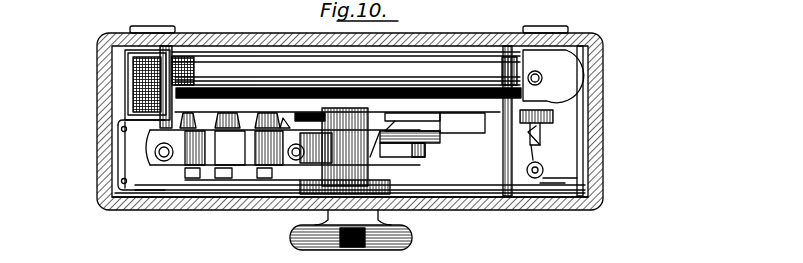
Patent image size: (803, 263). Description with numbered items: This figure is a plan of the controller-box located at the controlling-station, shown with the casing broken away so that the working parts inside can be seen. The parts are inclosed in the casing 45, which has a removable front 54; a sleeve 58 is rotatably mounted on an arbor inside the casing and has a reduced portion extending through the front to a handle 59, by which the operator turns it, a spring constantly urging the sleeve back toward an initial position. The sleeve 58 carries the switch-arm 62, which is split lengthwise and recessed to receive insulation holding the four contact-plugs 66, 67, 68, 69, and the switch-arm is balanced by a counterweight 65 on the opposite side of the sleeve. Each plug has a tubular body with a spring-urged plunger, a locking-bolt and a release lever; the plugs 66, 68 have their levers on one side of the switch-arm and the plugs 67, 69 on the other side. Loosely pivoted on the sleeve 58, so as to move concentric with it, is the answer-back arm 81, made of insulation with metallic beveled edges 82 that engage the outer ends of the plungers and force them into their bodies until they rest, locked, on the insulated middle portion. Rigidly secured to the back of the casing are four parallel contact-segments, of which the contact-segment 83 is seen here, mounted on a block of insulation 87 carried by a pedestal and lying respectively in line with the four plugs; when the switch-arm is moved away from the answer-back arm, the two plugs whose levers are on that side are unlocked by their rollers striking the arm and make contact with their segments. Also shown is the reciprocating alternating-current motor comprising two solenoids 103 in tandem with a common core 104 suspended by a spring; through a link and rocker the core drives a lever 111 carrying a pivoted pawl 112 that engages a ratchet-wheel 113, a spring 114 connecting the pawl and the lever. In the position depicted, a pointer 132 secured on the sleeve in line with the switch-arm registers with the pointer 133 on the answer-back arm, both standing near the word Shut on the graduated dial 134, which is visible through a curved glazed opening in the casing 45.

The casing 45 is at (604, 58).
The removable front 54 is at (603, 204).
The sleeve 58 is at (395, 186).
The handle 59 is at (412, 240).
The switch-arm 62 is at (320, 148).
The counterweight 65 is at (427, 157).
The contact-plug 66 is at (188, 113).
The contact-plug 67 is at (226, 113).
The contact-plug 68 is at (283, 155).
The contact-plug 69 is at (288, 131).
The answer-back arm 81 is at (318, 113).
The metallic beveled edges 82 is at (263, 113).
The contact-segment 83 is at (412, 114).
The block of insulation 87 is at (462, 100).
The solenoid 103 is at (553, 77).
The core 104 is at (544, 68).
The lever 111 is at (553, 141).
The pawl 112 is at (538, 130).
The ratchet-wheel 113 is at (548, 126).
The spring 114 is at (543, 165).
The pointer 132 is at (232, 190).
The pointer 133 is at (118, 156).
The graduated dial 134 is at (463, 193).